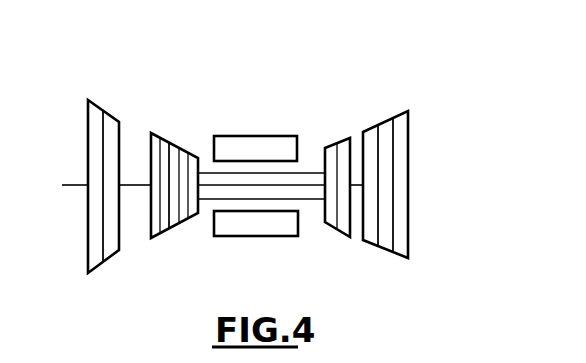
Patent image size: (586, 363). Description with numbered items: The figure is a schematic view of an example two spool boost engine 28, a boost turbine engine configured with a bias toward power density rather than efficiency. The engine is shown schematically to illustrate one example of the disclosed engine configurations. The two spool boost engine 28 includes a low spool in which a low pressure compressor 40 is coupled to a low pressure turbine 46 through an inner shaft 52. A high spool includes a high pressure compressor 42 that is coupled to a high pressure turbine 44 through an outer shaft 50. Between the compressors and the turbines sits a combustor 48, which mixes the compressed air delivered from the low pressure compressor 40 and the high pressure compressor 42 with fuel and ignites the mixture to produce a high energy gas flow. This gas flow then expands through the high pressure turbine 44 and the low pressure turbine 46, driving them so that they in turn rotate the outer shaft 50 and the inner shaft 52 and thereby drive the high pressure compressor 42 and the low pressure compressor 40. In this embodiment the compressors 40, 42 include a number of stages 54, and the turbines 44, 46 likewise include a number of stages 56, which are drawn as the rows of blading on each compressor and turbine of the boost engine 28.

The two spool boost engine 28 is at (447, 74).
The low pressure compressor 40 is at (107, 85).
The high pressure compressor 42 is at (187, 127).
The high pressure turbine 44 is at (343, 138).
The low pressure turbine 46 is at (385, 123).
The combustor 48 is at (257, 136).
The outer shaft 50 is at (312, 200).
The inner shaft 52 is at (131, 188).
The stages 54 is at (113, 147).
The stages 56 is at (337, 222).